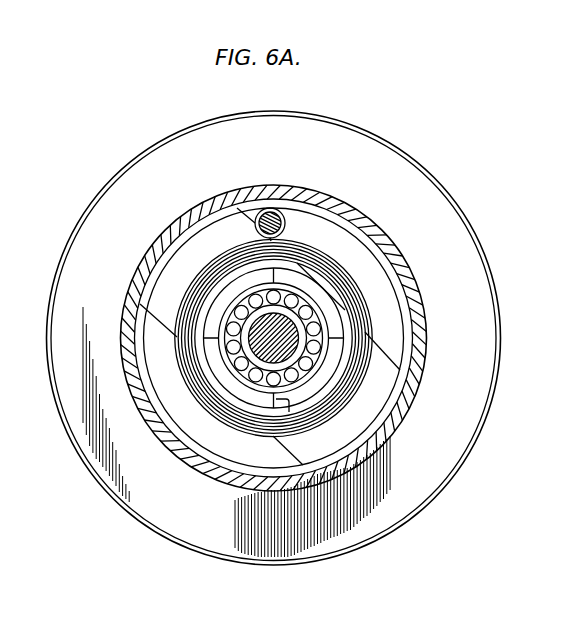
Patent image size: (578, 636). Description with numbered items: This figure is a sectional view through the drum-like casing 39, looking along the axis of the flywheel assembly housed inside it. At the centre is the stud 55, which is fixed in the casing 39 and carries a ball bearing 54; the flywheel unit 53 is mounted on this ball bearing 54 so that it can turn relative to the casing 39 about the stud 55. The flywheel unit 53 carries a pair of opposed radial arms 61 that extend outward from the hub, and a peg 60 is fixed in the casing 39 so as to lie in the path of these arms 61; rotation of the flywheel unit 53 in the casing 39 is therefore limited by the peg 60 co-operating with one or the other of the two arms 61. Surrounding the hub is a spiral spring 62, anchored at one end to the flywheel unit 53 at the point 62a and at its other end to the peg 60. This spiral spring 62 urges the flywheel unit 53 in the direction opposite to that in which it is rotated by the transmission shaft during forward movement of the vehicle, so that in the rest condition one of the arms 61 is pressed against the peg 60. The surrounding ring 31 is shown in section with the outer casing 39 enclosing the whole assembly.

The stator ring 31 is at (397, 235).
The drum-like casing 39 is at (468, 263).
The flywheel unit 53 is at (195, 437).
The ball bearing 54 is at (310, 360).
The stud 55 is at (257, 363).
The peg 60 is at (282, 215).
The radial arms 61 is at (226, 222).
The spiral spring 62 is at (363, 328).
The spiral spring anchorage 62a is at (273, 436).